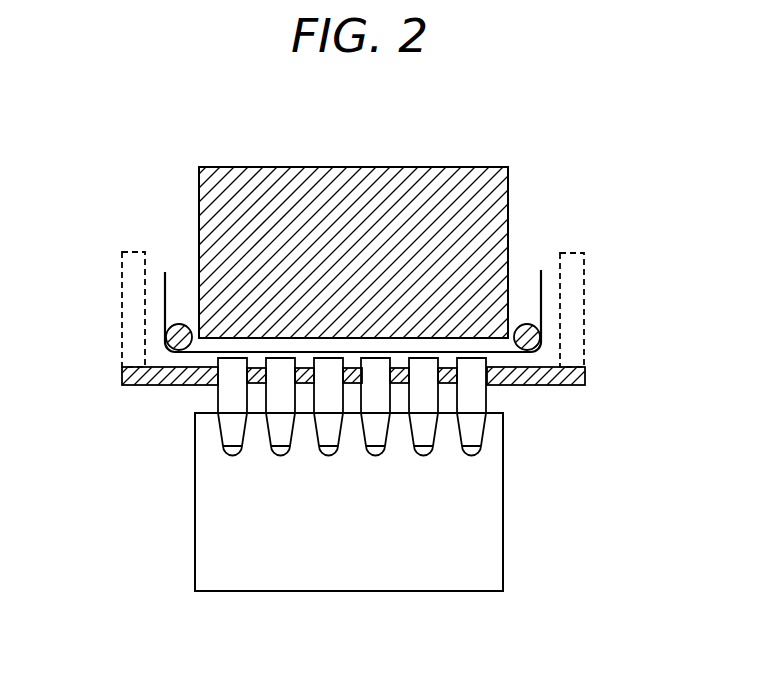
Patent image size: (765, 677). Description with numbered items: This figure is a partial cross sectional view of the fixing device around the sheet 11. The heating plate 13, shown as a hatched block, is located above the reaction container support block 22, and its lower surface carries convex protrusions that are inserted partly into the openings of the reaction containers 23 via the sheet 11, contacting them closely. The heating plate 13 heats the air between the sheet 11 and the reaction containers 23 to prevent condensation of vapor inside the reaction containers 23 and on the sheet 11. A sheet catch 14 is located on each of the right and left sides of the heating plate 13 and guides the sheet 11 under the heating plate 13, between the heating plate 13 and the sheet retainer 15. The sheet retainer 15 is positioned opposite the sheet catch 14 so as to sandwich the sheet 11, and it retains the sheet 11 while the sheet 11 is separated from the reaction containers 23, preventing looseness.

The sheet 11 is at (164, 297).
The heating plate 13 is at (349, 178).
The sheet catch 14 is at (178, 330).
The sheet retainer 15 is at (527, 385).
The reaction container support block 22 is at (208, 561).
The reaction containers 23 is at (213, 393).